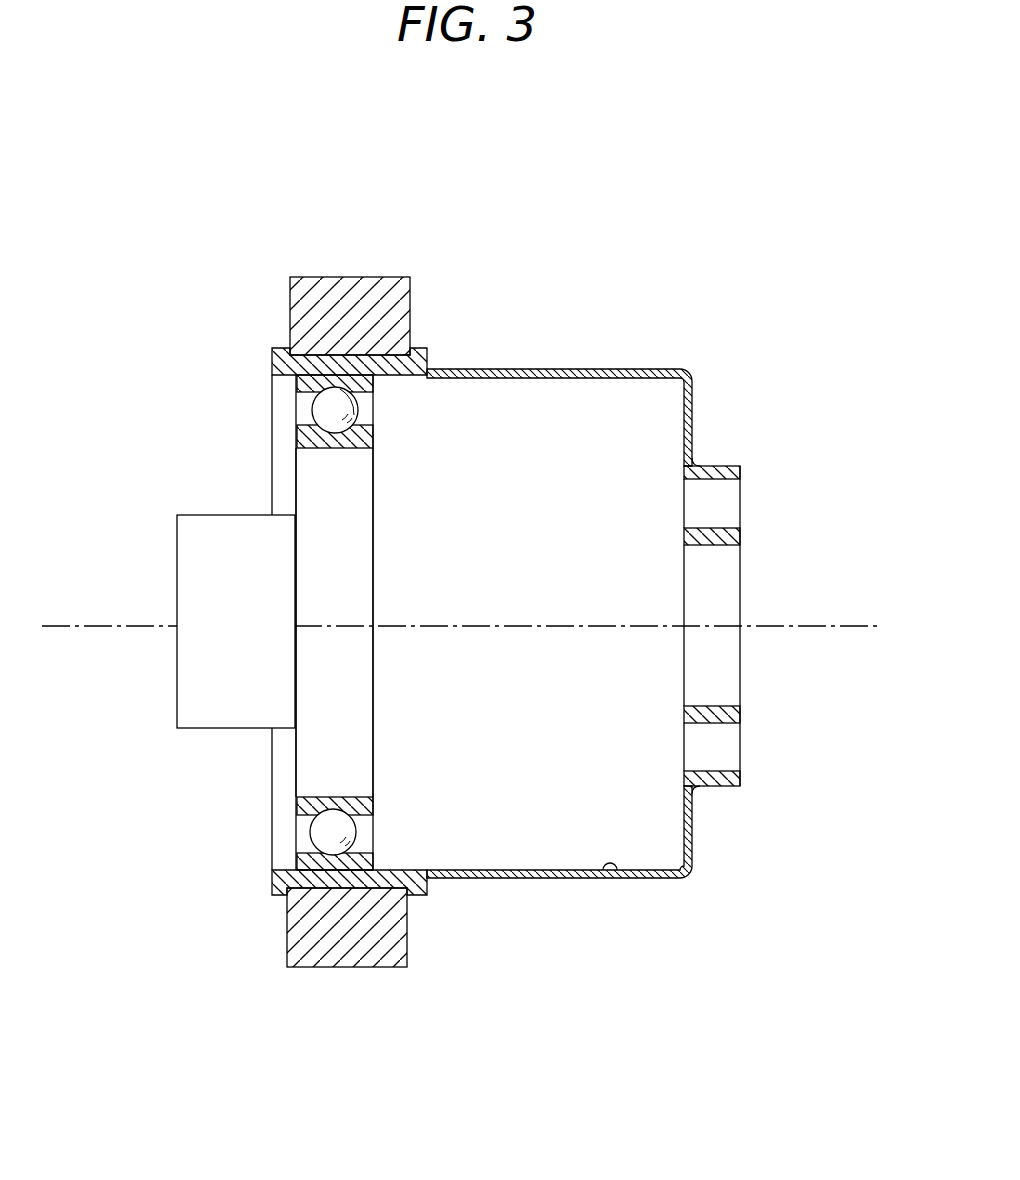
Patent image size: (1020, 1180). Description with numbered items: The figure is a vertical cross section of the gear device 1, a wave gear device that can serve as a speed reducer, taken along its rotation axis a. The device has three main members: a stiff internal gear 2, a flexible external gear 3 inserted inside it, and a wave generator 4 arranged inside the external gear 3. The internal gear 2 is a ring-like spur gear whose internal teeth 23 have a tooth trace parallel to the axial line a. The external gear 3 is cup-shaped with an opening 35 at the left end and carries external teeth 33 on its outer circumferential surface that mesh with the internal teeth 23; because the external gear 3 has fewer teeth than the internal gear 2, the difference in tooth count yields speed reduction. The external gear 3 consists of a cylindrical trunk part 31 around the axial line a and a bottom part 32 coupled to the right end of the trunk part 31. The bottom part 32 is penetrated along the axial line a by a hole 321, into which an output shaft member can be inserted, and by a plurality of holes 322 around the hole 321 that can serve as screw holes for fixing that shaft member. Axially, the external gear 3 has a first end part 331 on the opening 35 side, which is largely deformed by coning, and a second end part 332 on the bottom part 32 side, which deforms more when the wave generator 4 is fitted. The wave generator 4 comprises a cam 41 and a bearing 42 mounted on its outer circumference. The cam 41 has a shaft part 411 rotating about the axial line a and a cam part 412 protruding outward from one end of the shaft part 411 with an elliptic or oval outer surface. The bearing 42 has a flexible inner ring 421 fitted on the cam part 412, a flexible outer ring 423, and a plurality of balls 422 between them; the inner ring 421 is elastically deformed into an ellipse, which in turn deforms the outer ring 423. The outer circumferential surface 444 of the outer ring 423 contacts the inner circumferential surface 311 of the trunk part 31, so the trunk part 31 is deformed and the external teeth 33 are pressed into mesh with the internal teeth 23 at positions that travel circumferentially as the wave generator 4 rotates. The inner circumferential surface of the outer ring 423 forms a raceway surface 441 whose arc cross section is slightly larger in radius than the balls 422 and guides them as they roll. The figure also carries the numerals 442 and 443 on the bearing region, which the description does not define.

The gear device 1 is at (696, 176).
The internal gear 2 is at (369, 268).
The external gear 3 is at (510, 613).
The wave generator 4 is at (276, 697).
The internal teeth 23 is at (293, 393).
The trunk part 31 is at (559, 657).
The bottom part 32 is at (756, 598).
The external teeth 33 is at (309, 596).
The opening 35 is at (270, 433).
The inner circumferential surface of the trunk part 311 is at (612, 866).
The hole 321 is at (720, 546).
The holes 322 is at (720, 480).
The first end part 331 is at (270, 473).
The second end part 332 is at (742, 597).
The cam 41 is at (230, 629).
The bearing 42 is at (248, 852).
The shaft part 411 is at (230, 730).
The cam part 412 is at (293, 763).
The inner ring 421 is at (297, 807).
The balls 422 is at (317, 833).
The outer ring 423 is at (310, 852).
The raceway surface 441 is at (377, 418).
The ball 442 is at (373, 403).
The outer ring 443 is at (370, 383).
The outer circumferential surface of the outer ring 444 is at (357, 888).
The rotation axis a is at (108, 626).